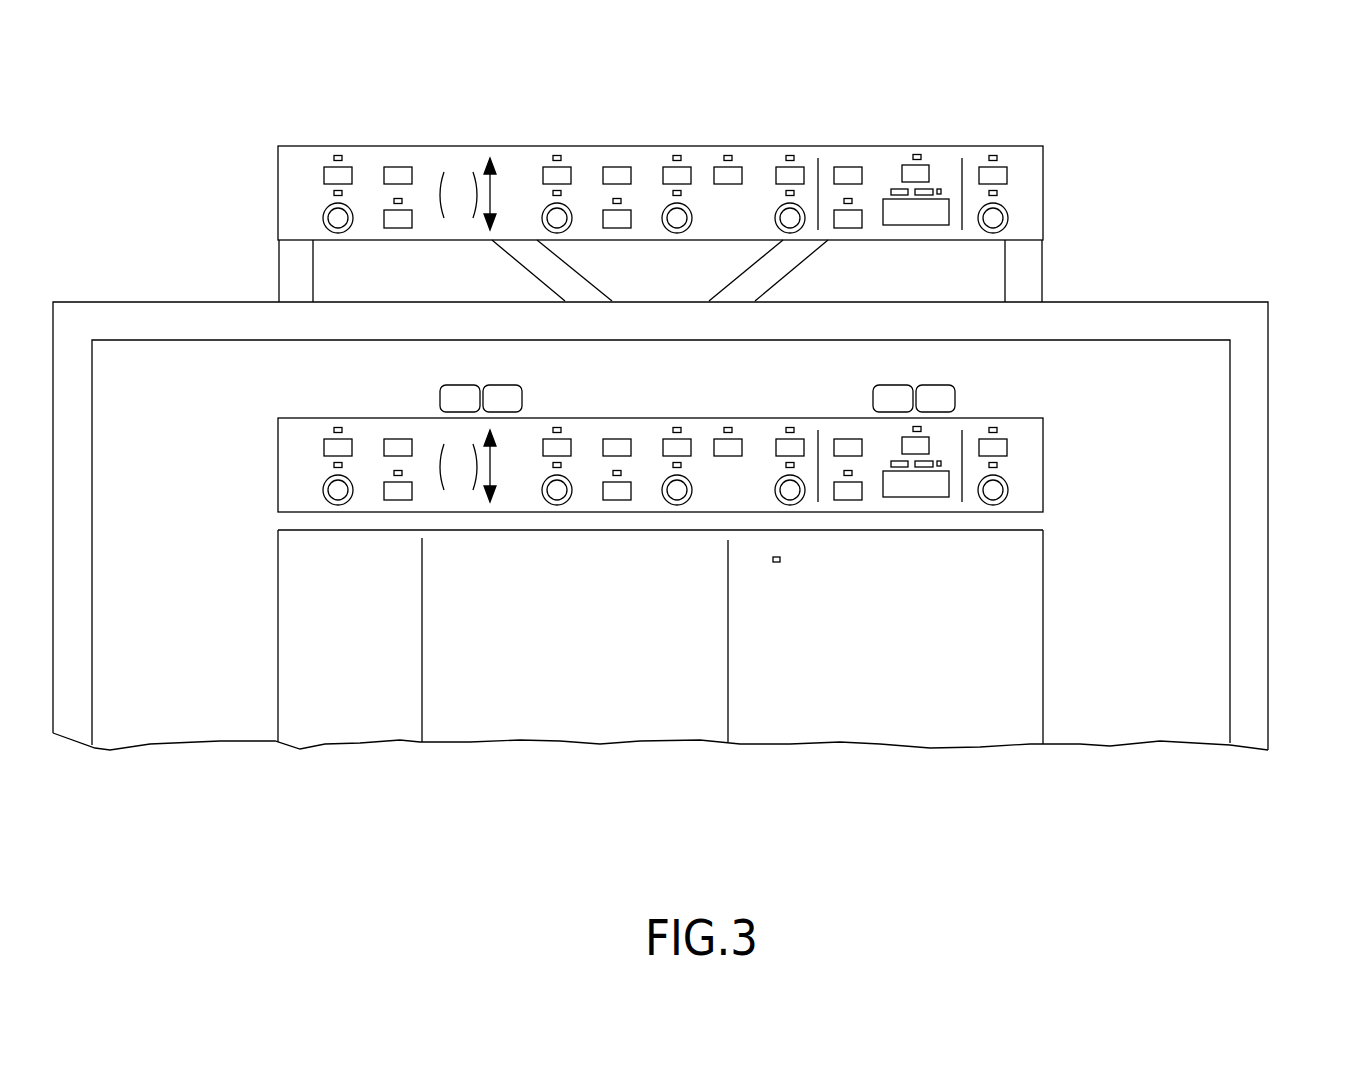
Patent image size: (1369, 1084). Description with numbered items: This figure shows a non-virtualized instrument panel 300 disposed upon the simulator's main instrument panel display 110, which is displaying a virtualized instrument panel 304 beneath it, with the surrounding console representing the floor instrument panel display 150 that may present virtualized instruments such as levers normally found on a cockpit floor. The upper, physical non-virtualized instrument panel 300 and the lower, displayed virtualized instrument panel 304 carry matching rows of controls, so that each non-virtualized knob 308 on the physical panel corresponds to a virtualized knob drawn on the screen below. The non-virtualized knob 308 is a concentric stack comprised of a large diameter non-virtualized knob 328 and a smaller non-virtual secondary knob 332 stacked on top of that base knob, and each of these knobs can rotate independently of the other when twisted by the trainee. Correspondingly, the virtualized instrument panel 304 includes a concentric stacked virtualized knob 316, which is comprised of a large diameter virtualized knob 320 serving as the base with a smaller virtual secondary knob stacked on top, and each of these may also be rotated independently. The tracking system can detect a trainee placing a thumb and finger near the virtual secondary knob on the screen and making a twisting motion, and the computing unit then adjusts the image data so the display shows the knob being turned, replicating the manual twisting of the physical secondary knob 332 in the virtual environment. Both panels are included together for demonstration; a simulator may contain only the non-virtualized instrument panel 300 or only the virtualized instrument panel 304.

The main instrument panel display 110 is at (236, 88).
The floor instrument panel display 150 is at (1268, 302).
The non-virtualized instrument panel 300 is at (1033, 197).
The virtualized instrument panel 304 is at (1033, 468).
The non-virtualized knob 308 is at (762, 222).
The concentric stacked virtualized knob 316 is at (758, 498).
The large diameter virtualized knob 320 is at (795, 500).
The large diameter non-virtualized knob 328 is at (780, 208).
The non-virtual secondary knob 332 is at (797, 208).